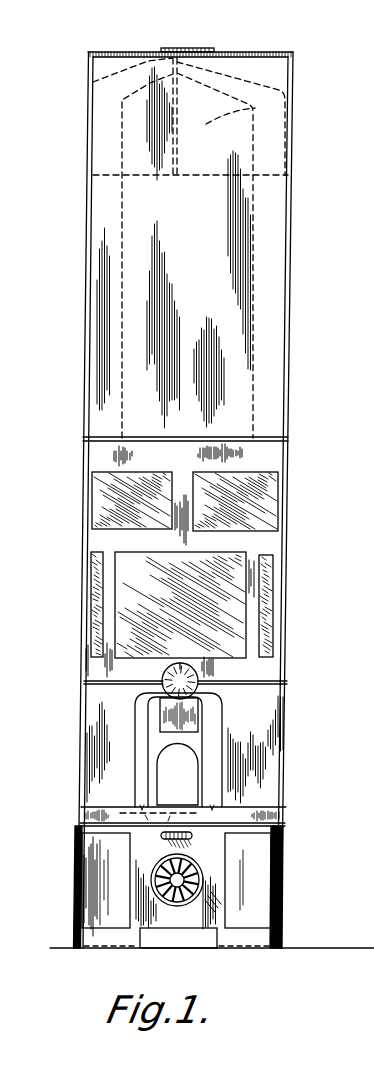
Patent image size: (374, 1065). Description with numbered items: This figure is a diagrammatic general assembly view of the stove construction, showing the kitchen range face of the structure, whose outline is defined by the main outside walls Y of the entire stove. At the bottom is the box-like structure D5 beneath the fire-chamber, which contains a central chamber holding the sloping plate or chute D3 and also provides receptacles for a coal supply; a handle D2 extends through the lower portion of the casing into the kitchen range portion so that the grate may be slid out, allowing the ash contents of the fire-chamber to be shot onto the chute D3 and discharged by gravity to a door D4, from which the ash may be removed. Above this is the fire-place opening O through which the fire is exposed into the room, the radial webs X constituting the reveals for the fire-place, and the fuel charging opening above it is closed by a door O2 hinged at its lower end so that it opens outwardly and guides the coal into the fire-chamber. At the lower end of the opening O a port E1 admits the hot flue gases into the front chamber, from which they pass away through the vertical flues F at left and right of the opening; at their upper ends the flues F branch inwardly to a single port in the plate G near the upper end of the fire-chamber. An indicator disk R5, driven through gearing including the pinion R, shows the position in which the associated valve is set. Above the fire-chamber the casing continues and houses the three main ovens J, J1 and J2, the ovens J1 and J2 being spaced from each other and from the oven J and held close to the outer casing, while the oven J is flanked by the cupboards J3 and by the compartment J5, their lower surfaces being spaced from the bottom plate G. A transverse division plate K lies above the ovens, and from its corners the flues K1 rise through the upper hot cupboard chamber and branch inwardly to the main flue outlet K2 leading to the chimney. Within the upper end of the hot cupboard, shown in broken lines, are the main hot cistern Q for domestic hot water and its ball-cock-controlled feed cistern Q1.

The division plate K is at (263, 441).
The flues K1 is at (300, 158).
The main flue outlet K2 is at (182, 52).
The main hot cistern Q is at (255, 108).
The feed cistern Q1 is at (143, 128).
The main outside walls Y is at (310, 610).
The oven J is at (188, 583).
The oven J1 is at (130, 497).
The oven J2 is at (245, 500).
The cupboards J3 is at (97, 595).
The right side flue J5 is at (263, 590).
The indicator disk R5 is at (197, 677).
The plate G is at (263, 682).
The doors O2 is at (180, 712).
The vertical flues F is at (312, 732).
The opening O is at (182, 797).
The radial webs X is at (305, 768).
The pinion R is at (283, 807).
The port E1 is at (76, 832).
The sloping plate or chute D3 is at (312, 893).
The handle D2 is at (190, 840).
The box-like structure D5 is at (210, 888).
The door D4 is at (183, 937).